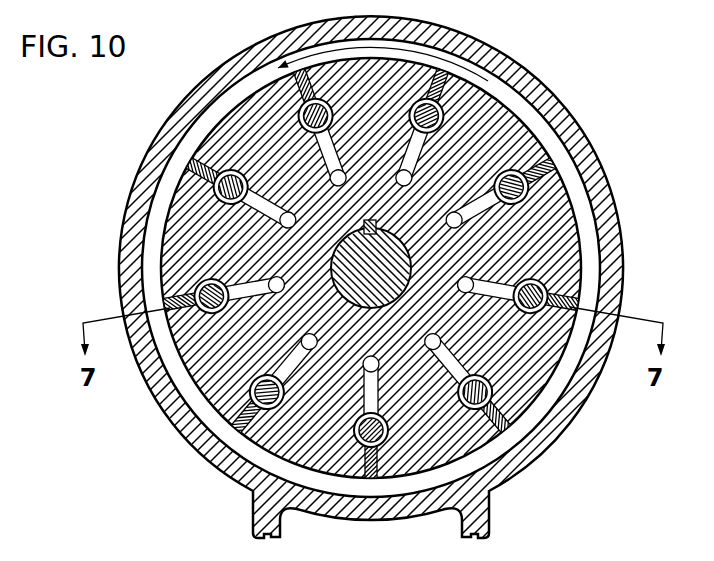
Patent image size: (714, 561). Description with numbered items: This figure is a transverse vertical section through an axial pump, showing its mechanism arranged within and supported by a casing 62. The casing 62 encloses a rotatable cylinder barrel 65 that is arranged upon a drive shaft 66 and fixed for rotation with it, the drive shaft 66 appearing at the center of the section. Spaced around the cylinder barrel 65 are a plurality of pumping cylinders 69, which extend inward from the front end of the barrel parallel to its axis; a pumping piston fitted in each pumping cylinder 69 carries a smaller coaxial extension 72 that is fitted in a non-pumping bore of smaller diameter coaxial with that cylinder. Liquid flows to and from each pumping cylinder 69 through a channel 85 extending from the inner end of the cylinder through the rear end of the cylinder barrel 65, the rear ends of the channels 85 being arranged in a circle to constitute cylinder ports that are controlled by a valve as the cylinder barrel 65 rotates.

The casing 62 is at (164, 144).
The cylinder barrel 65 is at (198, 228).
The drive shaft 66 is at (362, 273).
The pumping cylinder 69 is at (410, 100).
The coaxial extension 72 is at (297, 112).
The channel 85 is at (296, 221).